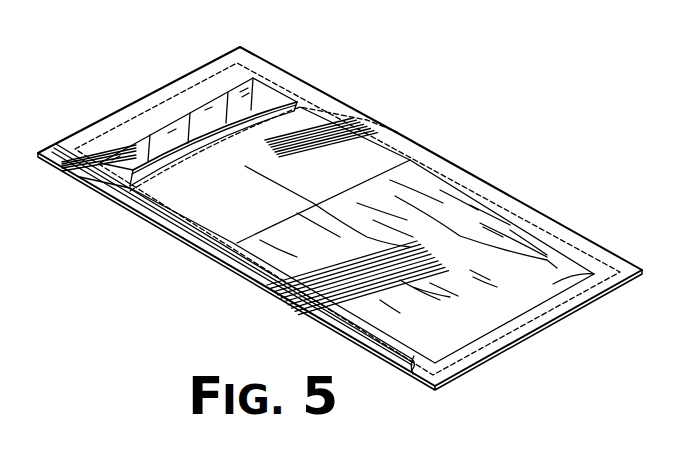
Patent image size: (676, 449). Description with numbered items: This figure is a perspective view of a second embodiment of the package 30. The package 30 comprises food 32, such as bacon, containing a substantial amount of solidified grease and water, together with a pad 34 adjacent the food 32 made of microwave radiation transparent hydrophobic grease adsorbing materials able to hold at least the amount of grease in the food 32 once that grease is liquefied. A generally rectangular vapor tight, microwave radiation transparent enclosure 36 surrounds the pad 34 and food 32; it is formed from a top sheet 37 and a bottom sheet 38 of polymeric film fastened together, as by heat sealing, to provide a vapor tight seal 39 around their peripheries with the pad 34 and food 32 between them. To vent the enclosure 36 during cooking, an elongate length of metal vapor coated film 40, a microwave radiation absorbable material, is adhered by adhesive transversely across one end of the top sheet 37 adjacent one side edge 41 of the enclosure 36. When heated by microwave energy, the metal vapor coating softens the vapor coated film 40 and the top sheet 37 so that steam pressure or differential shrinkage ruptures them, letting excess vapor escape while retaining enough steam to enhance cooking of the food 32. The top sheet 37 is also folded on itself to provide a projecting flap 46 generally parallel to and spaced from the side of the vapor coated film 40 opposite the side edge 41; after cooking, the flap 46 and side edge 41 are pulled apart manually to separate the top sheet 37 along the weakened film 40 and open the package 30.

The package 30 is at (541, 184).
The food 32 is at (456, 342).
The pad 34 is at (418, 352).
The enclosure 36 is at (241, 291).
The top sheet 37 is at (443, 163).
The bottom sheet 38 is at (287, 299).
The vapor tight seal 39 is at (267, 75).
The metal vapor coated film 40 is at (279, 101).
The side edge 41 is at (118, 113).
The flap 46 is at (368, 110).